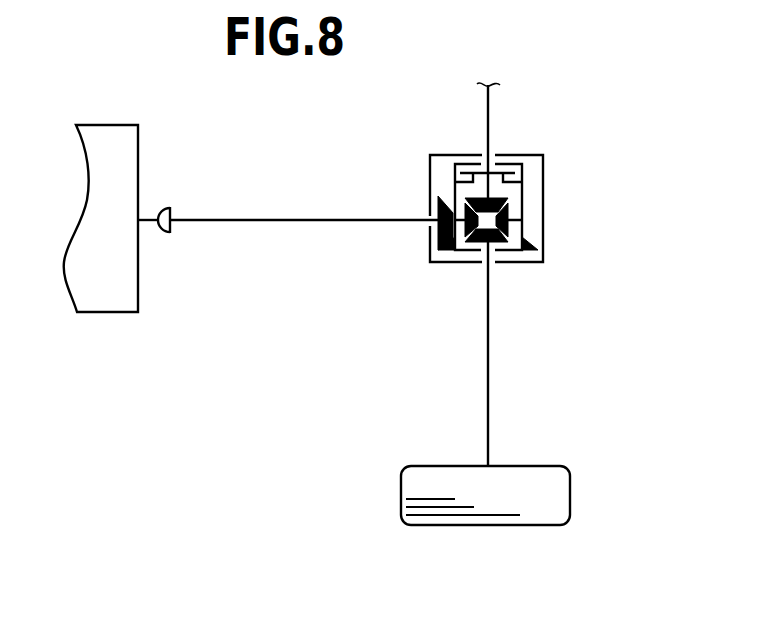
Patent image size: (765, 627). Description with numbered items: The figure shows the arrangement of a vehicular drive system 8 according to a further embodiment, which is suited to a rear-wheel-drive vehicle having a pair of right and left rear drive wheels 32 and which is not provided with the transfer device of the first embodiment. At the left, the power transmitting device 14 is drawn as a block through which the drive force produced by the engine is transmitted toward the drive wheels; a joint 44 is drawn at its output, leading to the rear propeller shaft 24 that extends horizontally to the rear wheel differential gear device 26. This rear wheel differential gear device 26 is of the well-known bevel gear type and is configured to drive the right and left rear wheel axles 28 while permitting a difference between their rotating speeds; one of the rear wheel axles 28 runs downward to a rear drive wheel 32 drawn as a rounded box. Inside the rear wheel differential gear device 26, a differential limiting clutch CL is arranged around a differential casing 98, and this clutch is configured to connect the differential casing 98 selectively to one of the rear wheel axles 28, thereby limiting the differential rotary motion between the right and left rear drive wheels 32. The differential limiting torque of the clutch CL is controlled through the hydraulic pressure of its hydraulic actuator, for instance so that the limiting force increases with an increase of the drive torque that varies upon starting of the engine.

The vehicular drive system 8 is at (136, 433).
The power transmitting device 14 is at (75, 289).
The rear propeller shaft 24 is at (302, 222).
The rear wheel differential gear device 26 is at (443, 156).
The rear wheel axles 28 is at (487, 339).
The rear drive wheels 32 is at (405, 489).
The joint 44 is at (148, 212).
The differential casing 98 is at (522, 196).
The differential limiting clutch CL is at (510, 164).